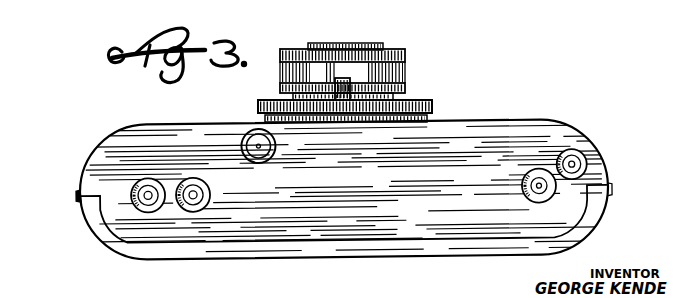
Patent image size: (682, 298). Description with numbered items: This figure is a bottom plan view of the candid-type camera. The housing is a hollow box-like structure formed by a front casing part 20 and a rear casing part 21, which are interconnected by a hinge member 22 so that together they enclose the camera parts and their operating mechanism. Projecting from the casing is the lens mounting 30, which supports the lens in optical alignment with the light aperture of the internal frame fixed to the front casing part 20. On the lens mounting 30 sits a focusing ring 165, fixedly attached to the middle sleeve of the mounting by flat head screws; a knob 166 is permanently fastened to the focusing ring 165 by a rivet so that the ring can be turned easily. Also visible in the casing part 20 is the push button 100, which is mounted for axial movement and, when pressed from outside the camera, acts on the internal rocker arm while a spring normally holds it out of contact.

The front casing part 20 is at (517, 137).
The rear casing part 21 is at (443, 247).
The hinge member 22 is at (77, 193).
The lens mounting 30 is at (376, 65).
The push button 100 is at (261, 147).
The focusing ring 165 is at (432, 107).
The knob 166 is at (355, 82).